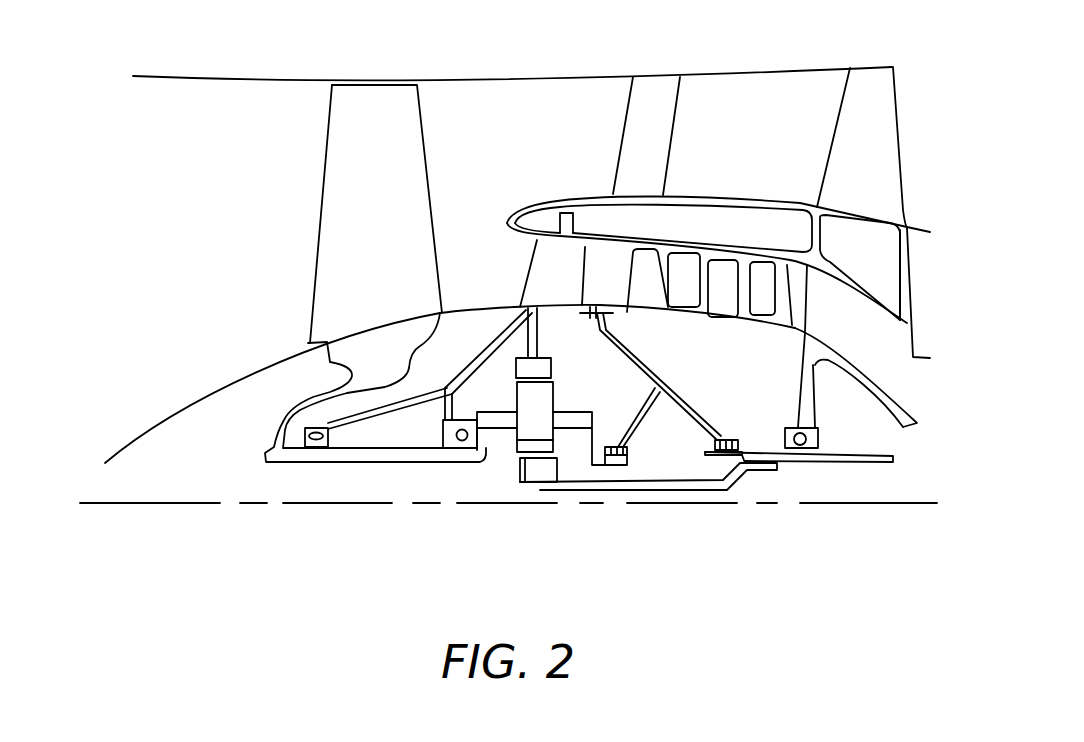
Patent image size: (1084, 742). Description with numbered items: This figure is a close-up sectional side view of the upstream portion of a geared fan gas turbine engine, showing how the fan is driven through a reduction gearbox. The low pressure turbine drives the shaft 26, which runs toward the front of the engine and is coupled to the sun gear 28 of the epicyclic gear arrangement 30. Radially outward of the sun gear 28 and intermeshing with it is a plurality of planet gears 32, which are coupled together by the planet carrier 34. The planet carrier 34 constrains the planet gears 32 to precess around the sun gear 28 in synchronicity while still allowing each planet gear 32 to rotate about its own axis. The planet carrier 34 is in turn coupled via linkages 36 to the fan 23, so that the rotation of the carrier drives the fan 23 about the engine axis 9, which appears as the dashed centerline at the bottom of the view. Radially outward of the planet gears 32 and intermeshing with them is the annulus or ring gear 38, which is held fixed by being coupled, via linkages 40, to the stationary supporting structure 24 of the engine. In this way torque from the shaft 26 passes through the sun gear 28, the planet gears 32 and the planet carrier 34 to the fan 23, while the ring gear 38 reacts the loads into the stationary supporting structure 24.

The engine axis 9 is at (198, 505).
The fan 23 is at (333, 193).
The stationary supporting structure 24 is at (537, 274).
The shaft 26 is at (667, 483).
The sun gear 28 is at (537, 470).
The epicyclic gear arrangement 30 is at (503, 455).
The planet gears 32 is at (523, 442).
The planet carrier 34 is at (583, 442).
The linkages 36 is at (492, 450).
The ring gear 38 is at (540, 373).
The linkages 40 is at (537, 340).